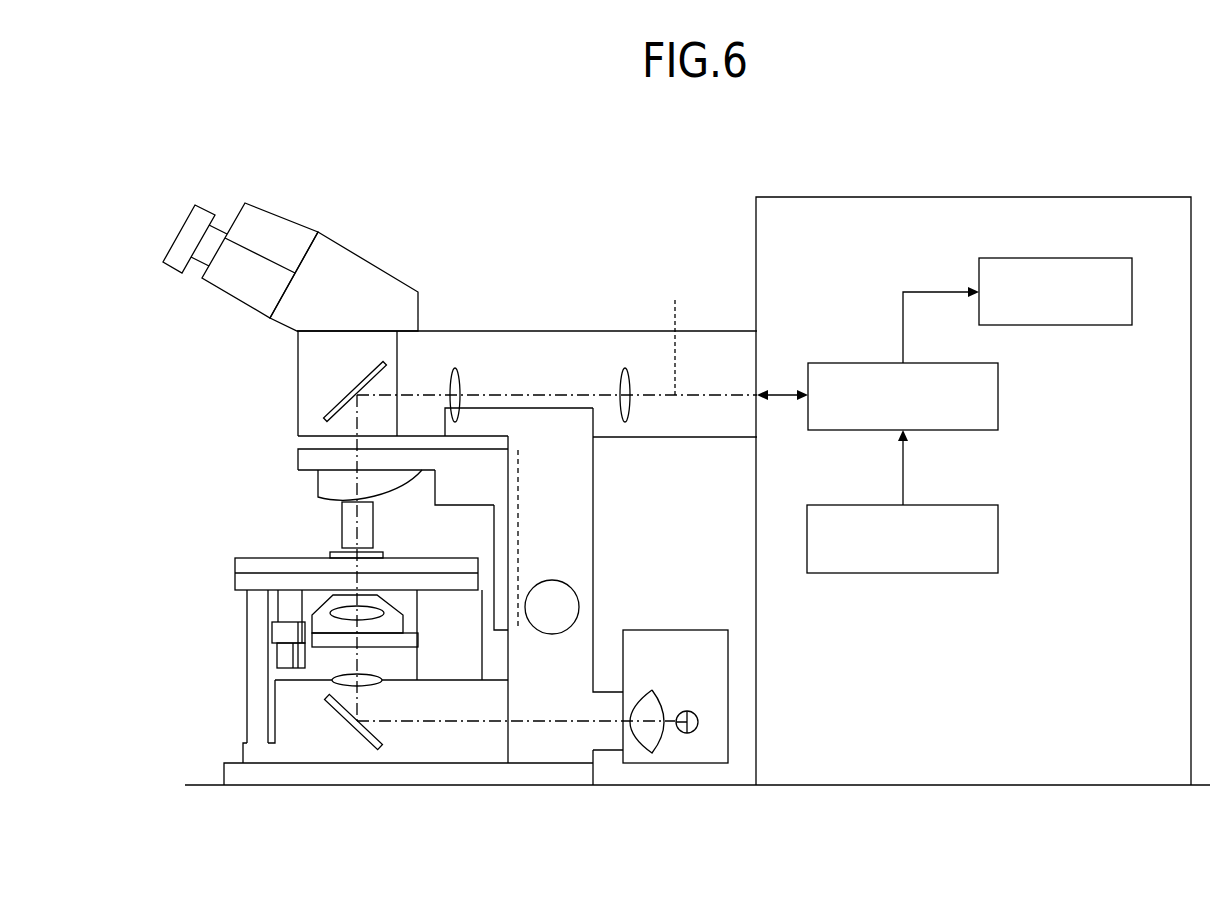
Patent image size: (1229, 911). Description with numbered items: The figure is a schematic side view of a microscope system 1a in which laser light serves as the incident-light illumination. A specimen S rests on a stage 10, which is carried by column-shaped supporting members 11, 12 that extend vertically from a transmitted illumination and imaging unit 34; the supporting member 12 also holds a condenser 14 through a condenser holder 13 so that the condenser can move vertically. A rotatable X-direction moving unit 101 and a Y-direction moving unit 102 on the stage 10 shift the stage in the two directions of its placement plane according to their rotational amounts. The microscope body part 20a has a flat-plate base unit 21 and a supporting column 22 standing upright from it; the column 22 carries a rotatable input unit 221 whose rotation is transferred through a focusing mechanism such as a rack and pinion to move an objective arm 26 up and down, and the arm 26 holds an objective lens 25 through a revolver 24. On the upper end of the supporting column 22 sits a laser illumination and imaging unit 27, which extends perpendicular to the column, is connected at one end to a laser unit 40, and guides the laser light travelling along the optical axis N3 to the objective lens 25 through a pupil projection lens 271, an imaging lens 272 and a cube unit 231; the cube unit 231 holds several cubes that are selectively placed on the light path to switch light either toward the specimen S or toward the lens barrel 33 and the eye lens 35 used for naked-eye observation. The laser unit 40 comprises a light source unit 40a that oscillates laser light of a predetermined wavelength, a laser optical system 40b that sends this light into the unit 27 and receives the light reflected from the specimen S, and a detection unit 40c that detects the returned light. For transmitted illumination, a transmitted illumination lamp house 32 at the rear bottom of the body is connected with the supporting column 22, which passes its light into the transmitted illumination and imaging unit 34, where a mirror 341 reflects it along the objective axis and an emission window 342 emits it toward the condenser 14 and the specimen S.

The microscope system 1a is at (448, 200).
The stage 10 is at (240, 565).
The supporting member 11 is at (253, 723).
The supporting member 12 is at (457, 600).
The condenser holder 13 is at (392, 645).
The condenser 14 is at (330, 608).
The microscope body part 20a is at (614, 477).
The base unit 21 is at (520, 775).
The supporting column 22 is at (578, 545).
The input unit 221 is at (620, 600).
The cube unit 231 is at (305, 395).
The revolver 24 is at (318, 485).
The objective lens 25 is at (342, 524).
The objective arm 26 is at (298, 455).
The laser illumination and imaging unit 27 is at (567, 345).
The pupil projection lens 271 is at (625, 368).
The imaging lens 272 is at (453, 368).
The transmitted illumination lamp house 32 is at (673, 760).
The lens barrel 33 is at (355, 277).
The transmitted illumination and imaging unit 34 is at (437, 745).
The mirror 341 is at (357, 745).
The emission window 342 is at (332, 680).
The eye lens 35 is at (185, 240).
The laser unit 40 is at (1102, 212).
The light source unit 40a is at (932, 492).
The laser optical system 40b is at (932, 350).
The detection unit 40c is at (1080, 248).
The X-direction moving unit 101 is at (277, 633).
The Y-direction moving unit 102 is at (287, 658).
The optical axis N3 is at (681, 334).
The specimen S is at (383, 555).